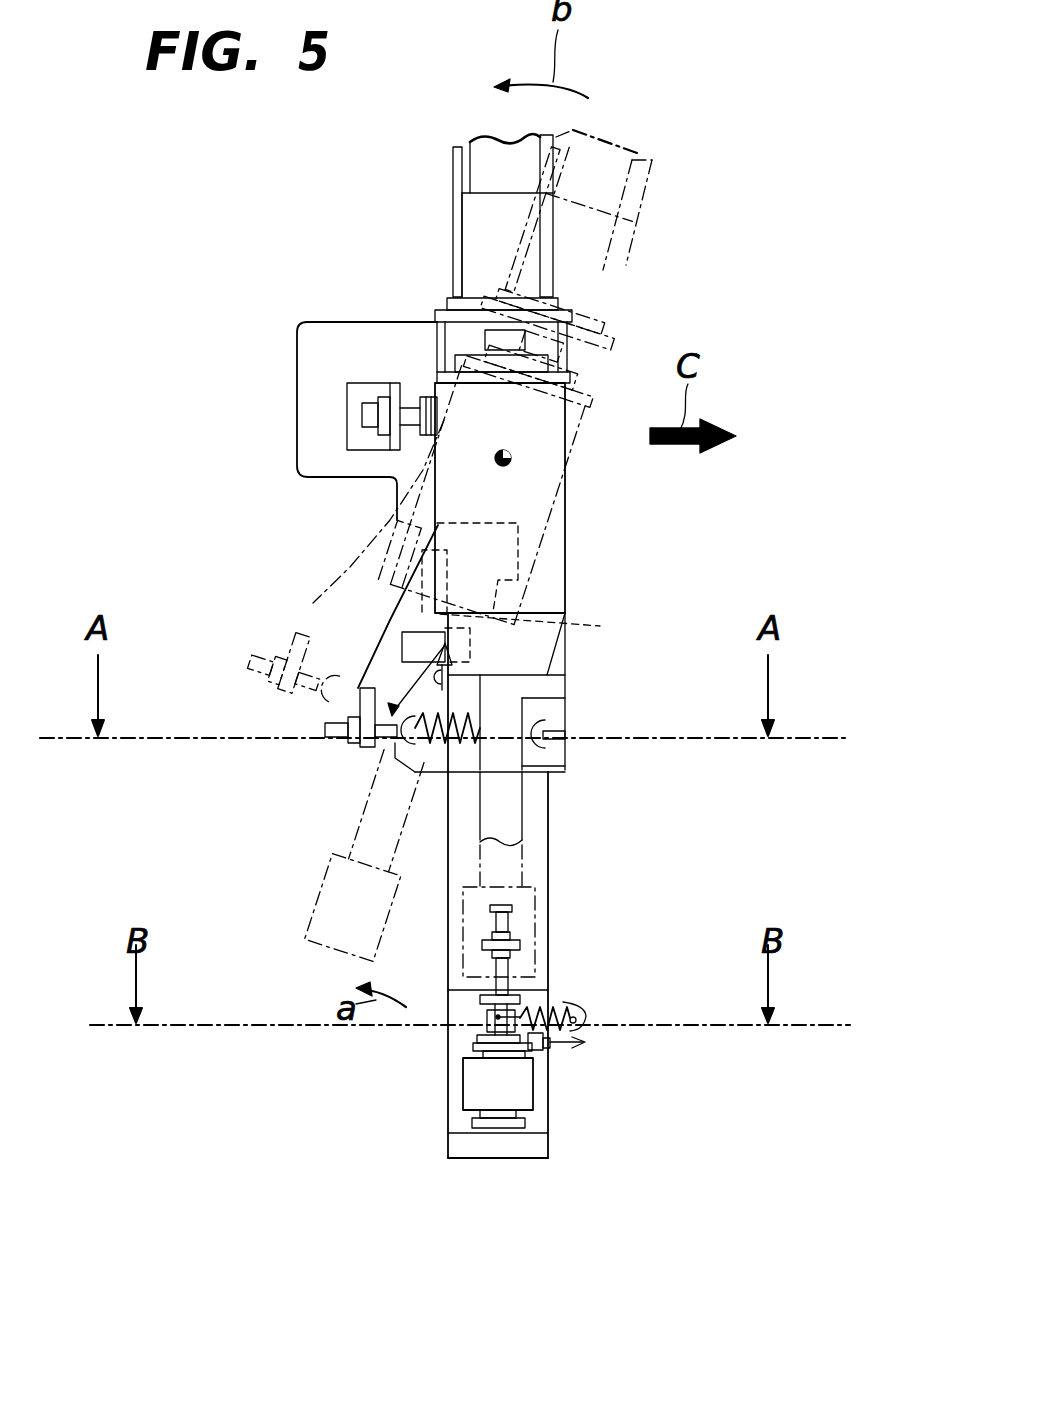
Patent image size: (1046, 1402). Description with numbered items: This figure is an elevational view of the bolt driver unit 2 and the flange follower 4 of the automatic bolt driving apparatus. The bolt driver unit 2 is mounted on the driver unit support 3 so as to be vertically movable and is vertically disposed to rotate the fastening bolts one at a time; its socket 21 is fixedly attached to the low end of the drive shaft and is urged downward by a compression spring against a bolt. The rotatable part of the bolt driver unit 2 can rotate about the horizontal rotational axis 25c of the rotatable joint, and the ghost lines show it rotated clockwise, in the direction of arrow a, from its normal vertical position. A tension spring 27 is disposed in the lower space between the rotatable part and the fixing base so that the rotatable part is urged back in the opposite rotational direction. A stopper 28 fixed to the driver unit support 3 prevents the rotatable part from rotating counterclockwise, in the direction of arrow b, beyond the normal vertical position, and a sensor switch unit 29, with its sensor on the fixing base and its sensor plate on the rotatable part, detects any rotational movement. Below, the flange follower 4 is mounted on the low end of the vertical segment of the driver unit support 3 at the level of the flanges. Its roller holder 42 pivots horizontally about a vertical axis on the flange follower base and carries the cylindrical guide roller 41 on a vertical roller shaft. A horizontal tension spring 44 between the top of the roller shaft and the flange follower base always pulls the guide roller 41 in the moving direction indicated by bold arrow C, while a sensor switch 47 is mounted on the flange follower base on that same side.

The bolt driver unit 2 is at (575, 530).
The driver unit support 3 is at (290, 352).
The flange follower 4 is at (560, 1105).
The socket 21 is at (337, 885).
The horizontal rotational axis 25c is at (510, 462).
The tension spring 27 is at (337, 683).
The stopper 28 is at (412, 410).
The sensor switch unit 29 is at (568, 622).
The guide roller 41 is at (512, 1092).
The roller holder 42 is at (475, 1044).
The tension spring 44 is at (540, 1014).
The sensor switch 47 is at (549, 1046).